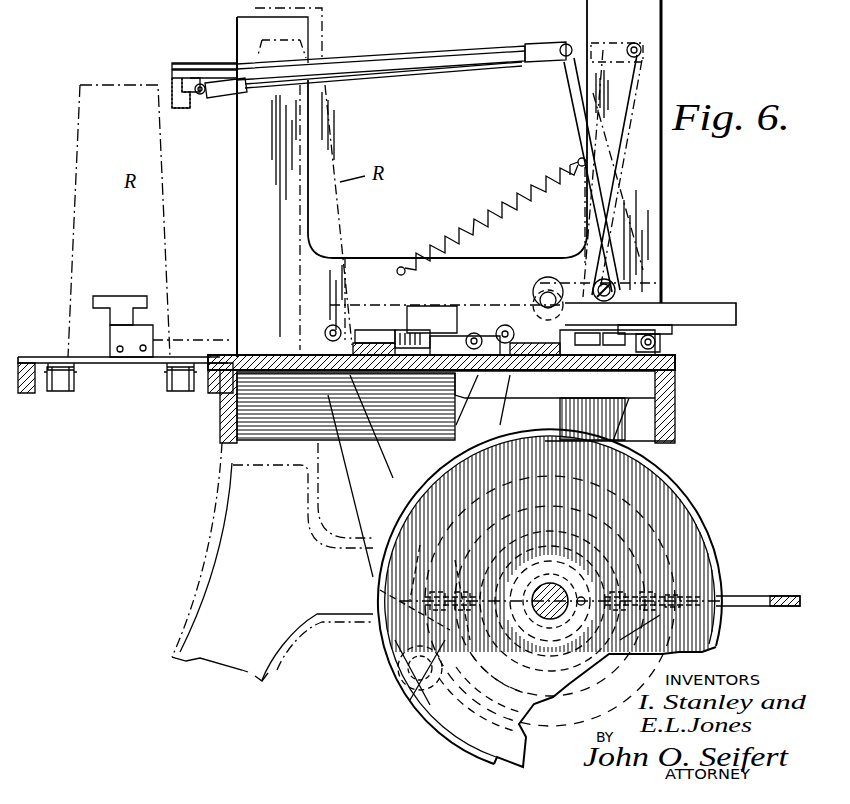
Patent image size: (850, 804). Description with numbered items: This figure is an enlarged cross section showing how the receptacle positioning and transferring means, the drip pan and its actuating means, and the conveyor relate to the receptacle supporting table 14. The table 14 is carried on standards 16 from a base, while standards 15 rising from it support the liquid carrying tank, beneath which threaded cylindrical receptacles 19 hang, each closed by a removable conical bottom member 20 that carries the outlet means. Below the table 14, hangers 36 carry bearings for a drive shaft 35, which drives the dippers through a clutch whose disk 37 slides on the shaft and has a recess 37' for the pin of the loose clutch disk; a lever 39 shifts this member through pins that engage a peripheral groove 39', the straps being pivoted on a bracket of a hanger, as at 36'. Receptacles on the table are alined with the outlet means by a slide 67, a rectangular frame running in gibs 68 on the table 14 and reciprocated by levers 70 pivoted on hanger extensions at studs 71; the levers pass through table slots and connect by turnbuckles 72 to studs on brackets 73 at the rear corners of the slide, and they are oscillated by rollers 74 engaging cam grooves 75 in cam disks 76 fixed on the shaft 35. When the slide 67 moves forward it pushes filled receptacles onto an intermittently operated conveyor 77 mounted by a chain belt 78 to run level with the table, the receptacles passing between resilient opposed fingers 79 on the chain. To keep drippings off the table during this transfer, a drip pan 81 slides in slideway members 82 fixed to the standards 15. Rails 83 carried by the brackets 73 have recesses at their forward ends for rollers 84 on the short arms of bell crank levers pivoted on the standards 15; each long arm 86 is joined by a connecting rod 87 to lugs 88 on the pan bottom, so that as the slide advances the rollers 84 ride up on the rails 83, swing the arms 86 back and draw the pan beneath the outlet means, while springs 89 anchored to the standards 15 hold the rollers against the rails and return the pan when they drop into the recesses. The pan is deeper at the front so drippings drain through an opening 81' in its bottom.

The table 14 is at (222, 428).
The standards 15 is at (648, 215).
The standards 16 is at (237, 565).
The cylindrical receptacles 19 is at (322, 25).
The conical bottom members 20 is at (318, 47).
The drive shaft 35 is at (556, 614).
The hangers 36 is at (639, 417).
The bracket pivot on shaft hanger 36' is at (465, 628).
The clutch disk 37 is at (652, 636).
The recess 37' is at (667, 642).
The lever 39 is at (758, 583).
The peripheral groove 39' is at (576, 659).
The slide 67 is at (392, 328).
The gibs 68 is at (288, 345).
The levers 70 is at (470, 437).
The studs 71 is at (418, 688).
The turnbuckles 72 is at (358, 328).
The brackets 73 is at (474, 333).
The rollers 74 is at (393, 613).
The cam grooves 75 is at (234, 341).
The cam disks 76 is at (690, 536).
The conveyor 77 is at (118, 368).
The chain belt 78 is at (55, 392).
The fingers 79 is at (122, 290).
The drip pan 81 is at (174, 53).
The opening 81' is at (162, 83).
The slideway members 82 is at (320, 70).
The rails 83 is at (712, 298).
The rollers 84 is at (535, 264).
The long arm 86 is at (655, 160).
The connecting rods 87 is at (445, 70).
The lugs 88 is at (198, 95).
The springs 89 is at (490, 210).